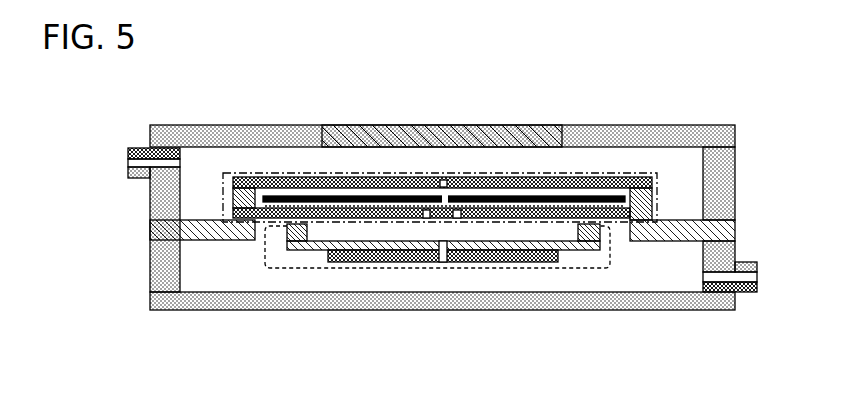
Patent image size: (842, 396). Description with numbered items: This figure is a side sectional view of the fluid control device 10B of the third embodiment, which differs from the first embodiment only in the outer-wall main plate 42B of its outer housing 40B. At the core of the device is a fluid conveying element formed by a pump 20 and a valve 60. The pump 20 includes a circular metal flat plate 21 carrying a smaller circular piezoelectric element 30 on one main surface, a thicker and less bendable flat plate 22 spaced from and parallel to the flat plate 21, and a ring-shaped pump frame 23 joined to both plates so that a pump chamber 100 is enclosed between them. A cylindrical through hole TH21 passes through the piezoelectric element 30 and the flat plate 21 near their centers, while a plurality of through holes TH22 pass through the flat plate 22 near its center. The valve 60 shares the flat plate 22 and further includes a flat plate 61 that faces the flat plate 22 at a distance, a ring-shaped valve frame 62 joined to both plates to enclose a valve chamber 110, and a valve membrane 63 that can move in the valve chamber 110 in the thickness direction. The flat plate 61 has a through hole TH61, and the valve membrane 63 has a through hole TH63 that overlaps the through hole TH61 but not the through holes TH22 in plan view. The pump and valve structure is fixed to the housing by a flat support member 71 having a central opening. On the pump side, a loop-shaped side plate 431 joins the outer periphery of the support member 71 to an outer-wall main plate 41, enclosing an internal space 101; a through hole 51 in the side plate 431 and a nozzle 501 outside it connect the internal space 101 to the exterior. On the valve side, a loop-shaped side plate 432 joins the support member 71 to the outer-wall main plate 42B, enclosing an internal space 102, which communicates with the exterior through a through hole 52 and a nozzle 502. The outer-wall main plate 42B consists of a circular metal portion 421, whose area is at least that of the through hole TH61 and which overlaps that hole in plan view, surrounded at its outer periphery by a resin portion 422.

The fluid control device 10B is at (707, 56).
The outer housing 40B is at (738, 124).
The outer-wall main plate 41 is at (660, 300).
The outer-wall main plate 42B is at (528, 73).
The metal portion 421 is at (540, 128).
The resin portion 422 is at (596, 128).
The side plate 431 is at (726, 255).
The side plate 432 is at (727, 182).
The through hole 51 is at (718, 284).
The nozzle 501 is at (744, 293).
The through hole 52 is at (163, 160).
The nozzle 502 is at (136, 180).
The valve 60 is at (416, 155).
The flat plate 61 is at (301, 196).
The valve frame 62 is at (231, 179).
The valve membrane 63 is at (352, 206).
The through hole TH61 is at (442, 184).
The through hole TH63 is at (446, 196).
The pump chamber 100 is at (507, 232).
The internal space 101 is at (588, 276).
The internal space 102 is at (670, 163).
The valve chamber 110 is at (604, 197).
The support member 71 is at (157, 231).
The pump 20 is at (398, 287).
The flat plate 21 is at (308, 246).
The flat plate 22 is at (347, 249).
The pump frame 23 is at (291, 233).
The piezoelectric element 30 is at (387, 258).
The through hole TH21 is at (443, 258).
The through holes TH22 is at (432, 220).